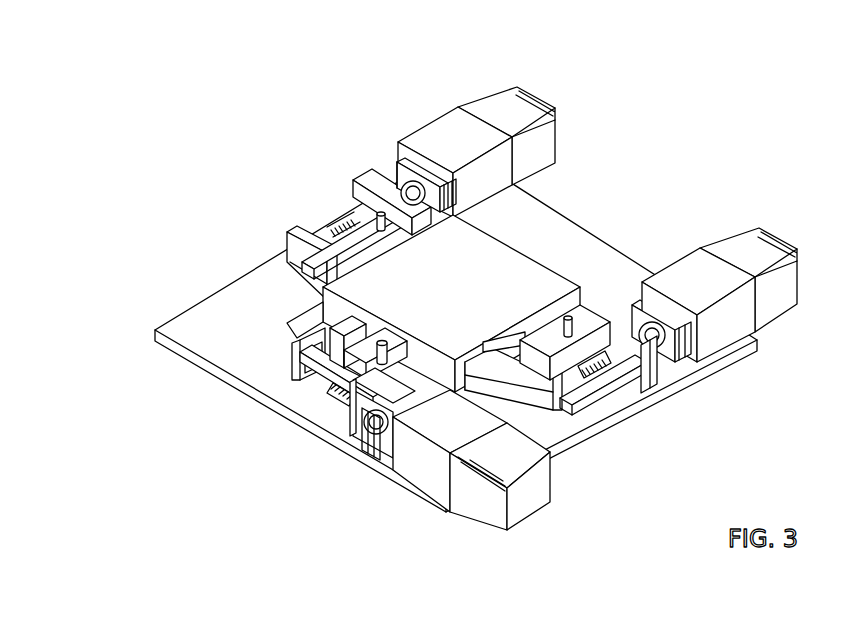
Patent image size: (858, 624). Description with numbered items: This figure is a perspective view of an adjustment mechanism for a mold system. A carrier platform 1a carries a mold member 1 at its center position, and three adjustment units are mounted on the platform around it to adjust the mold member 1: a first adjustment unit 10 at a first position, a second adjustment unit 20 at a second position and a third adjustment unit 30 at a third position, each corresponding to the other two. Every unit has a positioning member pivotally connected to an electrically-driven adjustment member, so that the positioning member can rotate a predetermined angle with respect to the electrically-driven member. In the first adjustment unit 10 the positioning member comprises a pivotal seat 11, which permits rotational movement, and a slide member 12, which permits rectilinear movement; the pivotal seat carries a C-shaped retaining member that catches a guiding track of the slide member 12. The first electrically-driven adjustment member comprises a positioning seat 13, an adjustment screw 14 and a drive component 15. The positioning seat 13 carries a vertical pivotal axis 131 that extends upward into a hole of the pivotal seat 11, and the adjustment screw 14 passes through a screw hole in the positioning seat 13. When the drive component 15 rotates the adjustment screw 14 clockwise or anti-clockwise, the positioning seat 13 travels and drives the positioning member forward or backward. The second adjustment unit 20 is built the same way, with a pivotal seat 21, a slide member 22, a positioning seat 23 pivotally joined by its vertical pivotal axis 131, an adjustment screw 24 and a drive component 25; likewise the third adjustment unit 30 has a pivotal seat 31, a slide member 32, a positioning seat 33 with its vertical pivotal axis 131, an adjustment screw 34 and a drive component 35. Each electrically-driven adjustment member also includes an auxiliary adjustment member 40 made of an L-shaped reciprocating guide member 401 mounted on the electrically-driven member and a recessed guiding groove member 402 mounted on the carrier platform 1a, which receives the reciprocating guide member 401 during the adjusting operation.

The mold member 1 is at (473, 242).
The carrier platform 1a is at (180, 347).
The first adjustment unit 10 is at (518, 120).
The pivotal seat 11 is at (332, 240).
The slide member 12 is at (287, 240).
The positioning seat 13 is at (356, 184).
The vertical pivotal axis 131 is at (383, 222).
The adjustment screw 14 is at (477, 140).
The drive component 15 is at (550, 137).
The second adjustment unit 20 is at (734, 204).
The pivotal seat 21 is at (598, 392).
The slide member 22 is at (548, 403).
The positioning seat 23 is at (605, 318).
The adjustment screw 24 is at (625, 400).
The drive component 25 is at (765, 245).
The third adjustment unit 30 is at (408, 490).
The pivotal seat 31 is at (320, 375).
The slide member 32 is at (290, 365).
The positioning seat 33 is at (345, 405).
The adjustment screw 34 is at (335, 395).
The drive component 35 is at (522, 482).
The auxiliary adjustment member 40 is at (357, 162).
The reciprocating guide member 401 is at (397, 168).
The guiding groove member 402 is at (342, 210).